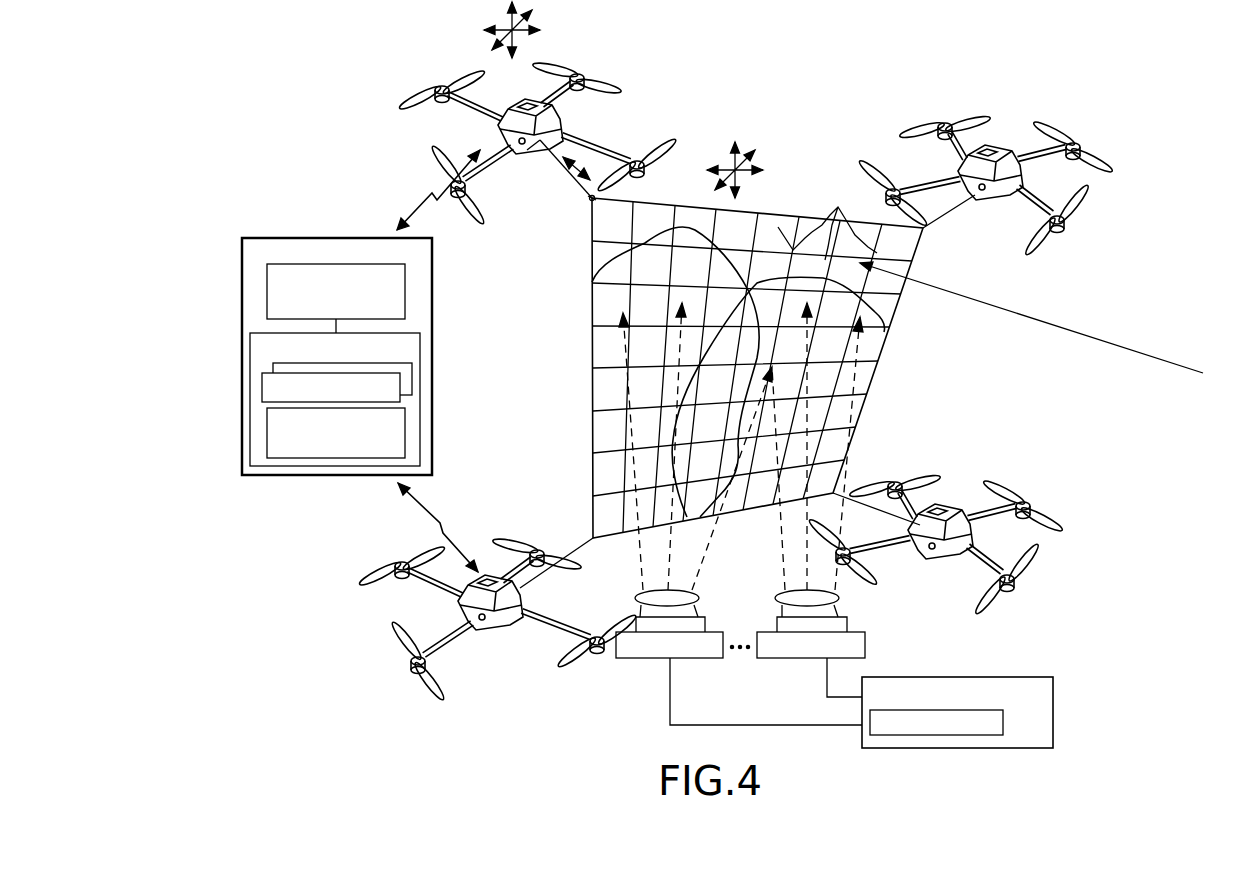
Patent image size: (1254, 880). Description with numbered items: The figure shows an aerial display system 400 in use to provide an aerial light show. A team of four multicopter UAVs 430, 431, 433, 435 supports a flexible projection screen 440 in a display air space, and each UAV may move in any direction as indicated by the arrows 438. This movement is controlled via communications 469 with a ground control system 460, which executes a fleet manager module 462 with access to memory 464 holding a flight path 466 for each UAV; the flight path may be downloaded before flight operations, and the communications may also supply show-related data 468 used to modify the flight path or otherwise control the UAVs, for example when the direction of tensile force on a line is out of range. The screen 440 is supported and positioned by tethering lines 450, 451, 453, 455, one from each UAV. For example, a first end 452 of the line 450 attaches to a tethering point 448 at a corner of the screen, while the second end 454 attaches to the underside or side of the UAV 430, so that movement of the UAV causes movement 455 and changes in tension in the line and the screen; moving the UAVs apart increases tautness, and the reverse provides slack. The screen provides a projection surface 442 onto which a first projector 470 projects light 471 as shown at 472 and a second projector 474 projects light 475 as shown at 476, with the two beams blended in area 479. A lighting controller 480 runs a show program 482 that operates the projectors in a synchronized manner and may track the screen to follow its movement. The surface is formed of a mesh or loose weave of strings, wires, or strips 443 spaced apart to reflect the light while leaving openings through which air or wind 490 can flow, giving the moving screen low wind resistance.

The aerial display system 400 is at (1000, 92).
The UAV 430 is at (432, 80).
The UAV 431 is at (490, 653).
The UAV 433 is at (1037, 175).
The UAV 435 is at (1007, 532).
The movement 438 is at (506, 22).
The flexible projection screen 440 is at (895, 360).
The projection surface 442 is at (778, 227).
The mesh members 443 is at (838, 209).
The tethering point 448 is at (587, 205).
The tethering line 450 is at (573, 184).
The tethering line 451 is at (578, 550).
The first end 452 is at (596, 194).
The tethering line 453 is at (940, 230).
The second end 454 is at (535, 152).
The tethering line 455 is at (578, 162).
The ground control system 460 is at (432, 283).
The fleet manager module 462 is at (403, 297).
The memory 464 is at (420, 355).
The flight path 466 is at (412, 385).
The show-related data 468 is at (403, 425).
The communications 469 is at (423, 210).
The first projector 470 is at (765, 658).
The light 471 is at (694, 592).
The projected light area 472 is at (593, 270).
The second projector 474 is at (795, 658).
The light 475 is at (776, 598).
The projected light area 476 is at (883, 315).
The blend area 479 is at (718, 450).
The lighting controller 480 is at (1053, 696).
The show program 482 is at (1003, 722).
The air/wind 490 is at (1027, 315).